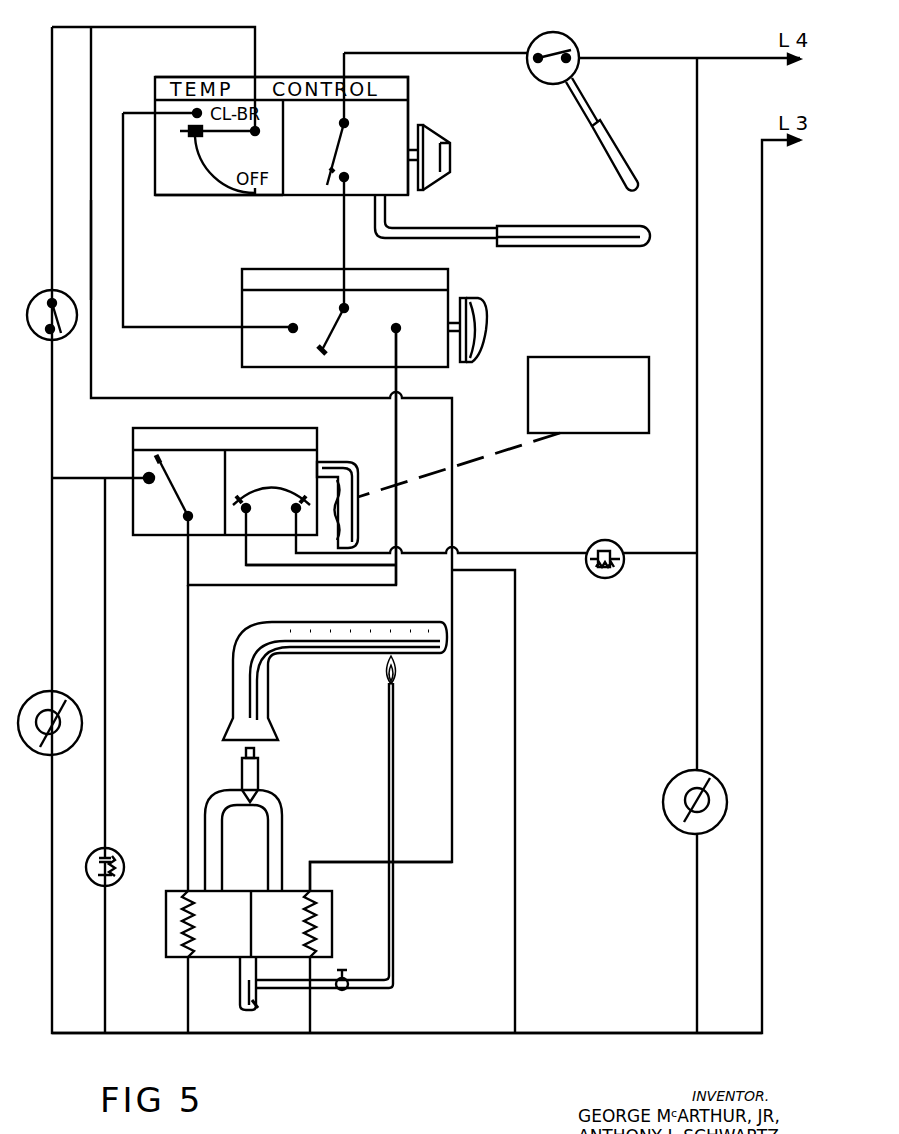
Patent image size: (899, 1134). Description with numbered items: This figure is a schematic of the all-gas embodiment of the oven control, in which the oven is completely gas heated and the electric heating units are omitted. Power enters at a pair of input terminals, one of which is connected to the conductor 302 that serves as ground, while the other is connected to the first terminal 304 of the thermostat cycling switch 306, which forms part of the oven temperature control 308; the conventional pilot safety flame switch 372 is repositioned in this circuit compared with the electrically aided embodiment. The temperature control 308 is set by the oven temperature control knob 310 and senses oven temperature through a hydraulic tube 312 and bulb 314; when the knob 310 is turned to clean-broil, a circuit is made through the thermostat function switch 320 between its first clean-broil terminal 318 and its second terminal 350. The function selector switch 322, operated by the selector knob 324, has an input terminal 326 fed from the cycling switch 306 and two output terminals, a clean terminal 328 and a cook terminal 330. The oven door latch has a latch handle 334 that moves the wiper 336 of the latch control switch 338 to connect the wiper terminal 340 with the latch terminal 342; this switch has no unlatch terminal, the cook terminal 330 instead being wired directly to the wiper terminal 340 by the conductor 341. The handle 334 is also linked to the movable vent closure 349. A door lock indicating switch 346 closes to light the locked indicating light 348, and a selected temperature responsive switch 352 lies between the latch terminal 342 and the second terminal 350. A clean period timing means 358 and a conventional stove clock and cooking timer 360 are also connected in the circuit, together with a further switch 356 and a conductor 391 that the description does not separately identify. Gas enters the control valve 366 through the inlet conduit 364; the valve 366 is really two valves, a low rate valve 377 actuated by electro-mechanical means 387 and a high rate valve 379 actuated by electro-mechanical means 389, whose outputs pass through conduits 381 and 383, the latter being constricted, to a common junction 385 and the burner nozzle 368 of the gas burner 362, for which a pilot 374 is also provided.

The ground conductor 302 is at (455, 1032).
The first terminal of thermostat cycling switch 304 is at (347, 125).
The thermostat cycling switch 306 is at (390, 115).
The oven temperature control 308 is at (267, 88).
The oven temperature control knob 310 is at (450, 160).
The hydraulic tube 312 is at (460, 236).
The bulb 314 is at (600, 244).
The first clean-broil terminal 318 is at (190, 112).
The thermostat function switch 320 is at (219, 214).
The function selector switch 322 is at (263, 270).
The selector knob 324 is at (485, 322).
The input terminal of selector switch 326 is at (340, 267).
The clean terminal 328 is at (290, 325).
The cook terminal 330 is at (398, 327).
The latch handle 334 is at (360, 480).
The wiper 336 is at (244, 566).
The latch control switch 338 is at (140, 455).
The wiper terminal 340 is at (186, 518).
The conductor 341 is at (397, 538).
The latch terminal 342 is at (146, 478).
The door lock indicating switch 346 is at (290, 490).
The locked indicating light 348 is at (608, 545).
The movable vent closure 349 is at (628, 360).
The second terminal of thermostat function switch 350 is at (258, 135).
The selected temperature responsive switch 352 is at (78, 330).
The oven light switch 356 is at (133, 840).
The clean period timing means 358 is at (70, 695).
The stove clock and cooking timer 360 is at (665, 790).
The gas burner 362 is at (355, 625).
The inlet conduit 364 is at (256, 1000).
The control valve 366 is at (165, 967).
The burner nozzle 368 is at (258, 753).
The pilot safety flame switch 372 is at (580, 68).
The pilot 374 is at (393, 740).
The low rate valve 377 is at (310, 882).
The high rate valve 379 is at (170, 900).
The conduit 381 is at (213, 812).
The smaller diameter conduit 383 is at (284, 842).
The common junction 385 is at (258, 792).
The electro-mechanical means 387 is at (318, 930).
The electro-mechanical means 389 is at (186, 925).
The conductor 391 is at (91, 250).